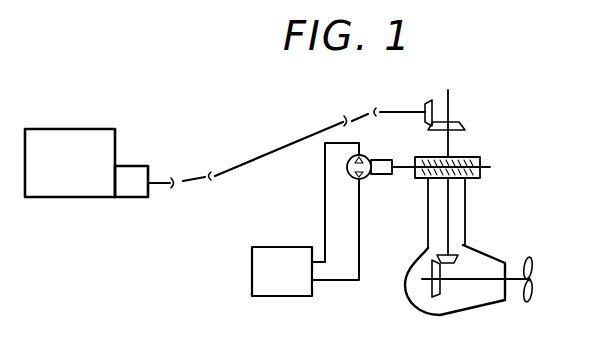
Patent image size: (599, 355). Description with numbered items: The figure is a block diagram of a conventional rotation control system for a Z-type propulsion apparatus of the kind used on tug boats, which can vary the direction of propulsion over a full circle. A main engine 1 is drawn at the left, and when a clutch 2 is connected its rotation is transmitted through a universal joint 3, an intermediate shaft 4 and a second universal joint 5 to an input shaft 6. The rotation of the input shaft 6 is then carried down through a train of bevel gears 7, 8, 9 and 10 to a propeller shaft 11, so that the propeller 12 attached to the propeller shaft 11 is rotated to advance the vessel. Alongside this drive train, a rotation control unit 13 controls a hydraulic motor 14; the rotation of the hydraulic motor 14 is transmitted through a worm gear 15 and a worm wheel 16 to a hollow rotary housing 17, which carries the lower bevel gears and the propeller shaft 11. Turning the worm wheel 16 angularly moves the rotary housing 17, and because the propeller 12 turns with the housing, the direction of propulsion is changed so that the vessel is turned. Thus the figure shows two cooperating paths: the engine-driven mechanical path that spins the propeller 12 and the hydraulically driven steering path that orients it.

The main engine 1 is at (90, 197).
The clutch 2 is at (136, 166).
The universal joint 3 is at (191, 175).
The intermediate shaft 4 is at (268, 157).
The universal joint 5 is at (357, 117).
The input shaft 6 is at (397, 110).
The bevel gear 7 is at (428, 100).
The bevel gear 8 is at (462, 127).
The bevel gear 9 is at (455, 255).
The bevel gear 10 is at (430, 288).
The propeller shaft 11 is at (487, 279).
The propeller 12 is at (532, 265).
The rotation control unit 13 is at (283, 246).
The hydraulic motor 14 is at (366, 176).
The worm gear 15 is at (470, 160).
The worm wheel 16 is at (478, 178).
The hollow rotary housing 17 is at (428, 243).